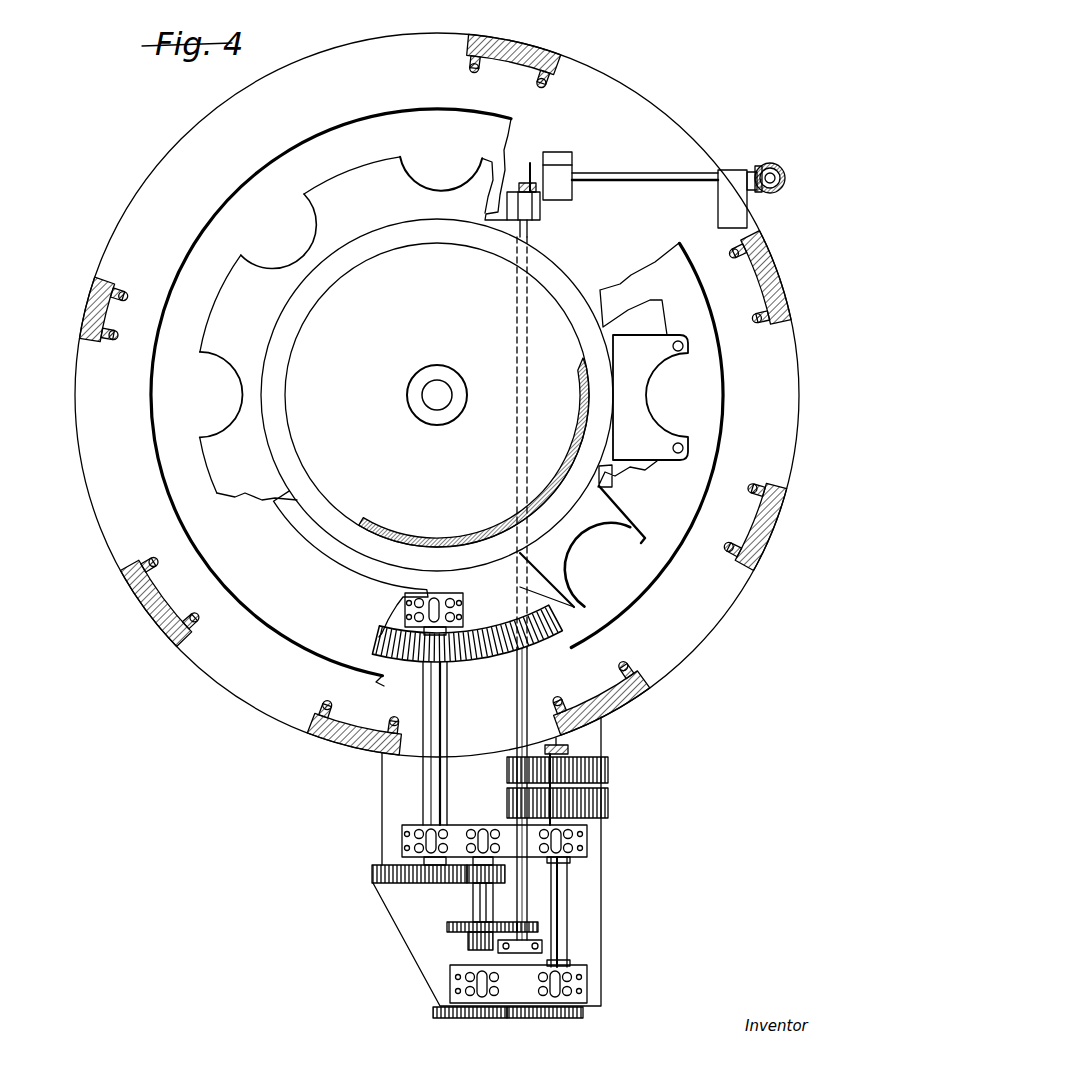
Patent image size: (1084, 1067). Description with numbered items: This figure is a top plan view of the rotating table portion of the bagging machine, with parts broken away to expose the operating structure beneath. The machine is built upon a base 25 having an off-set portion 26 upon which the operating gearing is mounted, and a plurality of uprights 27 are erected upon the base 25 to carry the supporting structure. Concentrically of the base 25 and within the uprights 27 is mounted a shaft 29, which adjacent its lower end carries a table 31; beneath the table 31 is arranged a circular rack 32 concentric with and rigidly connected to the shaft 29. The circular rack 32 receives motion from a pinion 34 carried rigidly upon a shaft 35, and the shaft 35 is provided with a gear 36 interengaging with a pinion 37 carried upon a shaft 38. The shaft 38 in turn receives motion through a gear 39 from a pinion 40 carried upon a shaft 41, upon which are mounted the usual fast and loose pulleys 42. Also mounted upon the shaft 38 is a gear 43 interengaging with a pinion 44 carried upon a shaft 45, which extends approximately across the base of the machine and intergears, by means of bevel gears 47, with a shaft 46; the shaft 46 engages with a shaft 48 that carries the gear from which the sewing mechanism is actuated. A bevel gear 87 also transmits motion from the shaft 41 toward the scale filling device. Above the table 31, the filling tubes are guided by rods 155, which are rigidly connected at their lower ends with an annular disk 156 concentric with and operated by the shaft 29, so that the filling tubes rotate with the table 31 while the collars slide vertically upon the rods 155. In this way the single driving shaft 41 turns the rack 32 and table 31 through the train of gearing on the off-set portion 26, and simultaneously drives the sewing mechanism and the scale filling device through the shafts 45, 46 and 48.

The base 25 is at (693, 634).
The uprights 27 is at (778, 272).
The table 31 is at (724, 402).
The annular disk 156 is at (362, 170).
The shaft 29 is at (437, 393).
The rods 155 is at (678, 352).
The bevel gears 47 is at (533, 165).
The shaft 46 is at (650, 170).
The shaft 48 is at (790, 160).
The circular rack 32 is at (492, 660).
The pinion 34 is at (430, 665).
The shaft 35 is at (438, 750).
The shaft 45 is at (527, 680).
The bevel gear 87 is at (574, 749).
The fast and loose pulleys 42 is at (608, 798).
The off-set portion 26 is at (598, 926).
The gear 36 is at (380, 878).
The pinion 37 is at (478, 882).
The shaft 38 is at (478, 908).
The pinion 44 is at (527, 921).
The gear 43 is at (458, 947).
The shaft 41 is at (560, 908).
The gear 39 is at (490, 1014).
The pinion 40 is at (570, 1017).